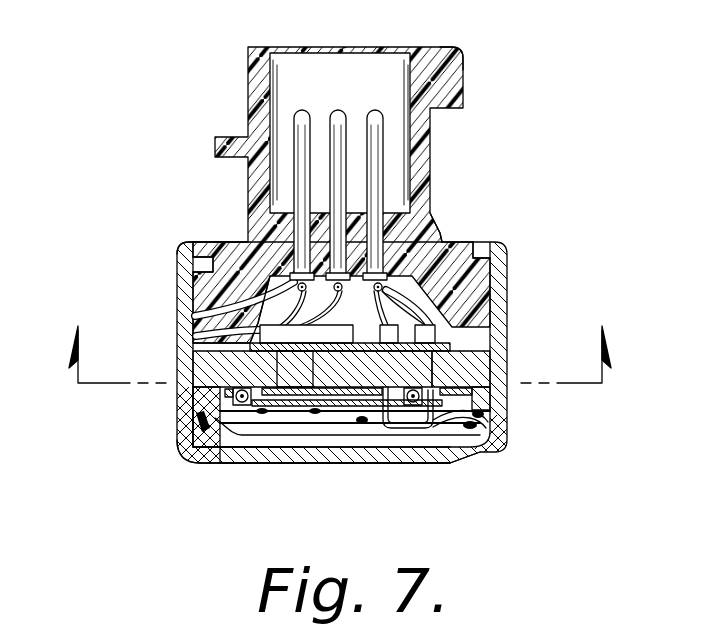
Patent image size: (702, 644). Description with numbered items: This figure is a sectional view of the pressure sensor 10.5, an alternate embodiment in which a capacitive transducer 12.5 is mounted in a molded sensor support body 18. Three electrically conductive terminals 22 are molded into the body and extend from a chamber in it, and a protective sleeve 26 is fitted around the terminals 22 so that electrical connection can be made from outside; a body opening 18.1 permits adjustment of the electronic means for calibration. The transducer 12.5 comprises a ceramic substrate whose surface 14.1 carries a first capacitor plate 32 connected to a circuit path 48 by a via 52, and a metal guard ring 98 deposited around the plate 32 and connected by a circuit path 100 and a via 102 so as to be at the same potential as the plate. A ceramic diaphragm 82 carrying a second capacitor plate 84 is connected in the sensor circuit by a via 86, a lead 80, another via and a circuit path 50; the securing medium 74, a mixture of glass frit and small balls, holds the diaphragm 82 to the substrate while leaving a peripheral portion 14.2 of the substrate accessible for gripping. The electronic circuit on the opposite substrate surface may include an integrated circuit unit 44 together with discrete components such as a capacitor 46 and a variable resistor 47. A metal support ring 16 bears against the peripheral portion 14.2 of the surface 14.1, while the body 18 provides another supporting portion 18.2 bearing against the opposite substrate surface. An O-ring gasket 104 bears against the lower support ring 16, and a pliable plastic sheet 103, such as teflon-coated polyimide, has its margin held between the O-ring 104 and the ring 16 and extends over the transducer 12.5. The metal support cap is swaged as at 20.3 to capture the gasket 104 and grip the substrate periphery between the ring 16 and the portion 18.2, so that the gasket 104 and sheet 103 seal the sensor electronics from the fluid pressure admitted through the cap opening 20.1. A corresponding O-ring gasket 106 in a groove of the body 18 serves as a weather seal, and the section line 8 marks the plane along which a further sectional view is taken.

The pressure sensor 10.5 is at (483, 113).
The protective sleeve 26 is at (410, 50).
The electrically conductive terminals 22 is at (375, 108).
The sensor support body 18 is at (418, 146).
The body opening 18.1 is at (430, 262).
The variable resistor 47 is at (484, 250).
The O-ring gasket 106 is at (232, 246).
The integrated circuit unit 44 is at (205, 265).
The circuit path 48 is at (232, 301).
The circuit path 100 is at (297, 328).
The supporting portion 18.2 is at (255, 346).
The via 102 is at (232, 388).
The peripheral portion of the substrate 14.2 is at (190, 388).
The metal support ring 16 is at (188, 410).
The securing medium 74 is at (180, 430).
The O-ring gasket 104 is at (213, 446).
The pliable plastic sheet material 103 is at (225, 440).
The swaged portion of the support cap 20.3 is at (229, 440).
The via 52 is at (287, 418).
The first capacitor plate 32 is at (303, 418).
The second capacitor plate 84 is at (337, 428).
The ceramic diaphragm 82 is at (385, 446).
The metal guard ring 98 is at (368, 424).
The via 86 is at (416, 436).
The lead 80 is at (433, 398).
The capacitor 46 is at (392, 328).
The circuit path 50 is at (428, 336).
The transducer 12.5 is at (484, 347).
The substrate surface 14.1 is at (470, 372).
The cap opening 20.1 is at (352, 466).
The section line 8- 8 is at (332, 354).